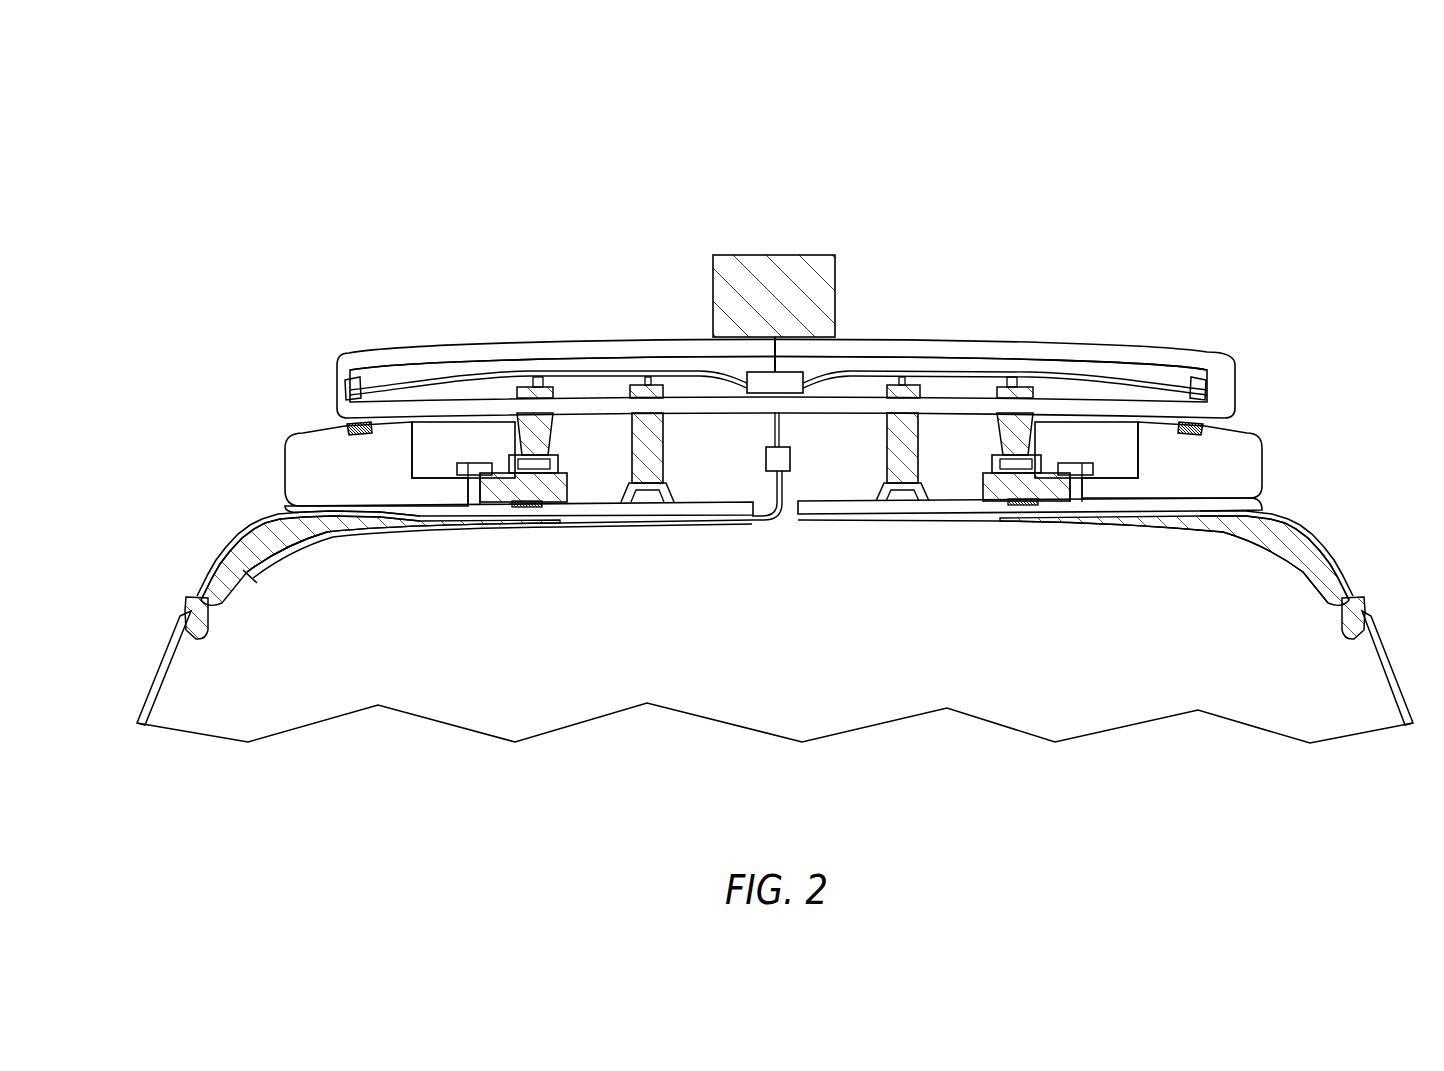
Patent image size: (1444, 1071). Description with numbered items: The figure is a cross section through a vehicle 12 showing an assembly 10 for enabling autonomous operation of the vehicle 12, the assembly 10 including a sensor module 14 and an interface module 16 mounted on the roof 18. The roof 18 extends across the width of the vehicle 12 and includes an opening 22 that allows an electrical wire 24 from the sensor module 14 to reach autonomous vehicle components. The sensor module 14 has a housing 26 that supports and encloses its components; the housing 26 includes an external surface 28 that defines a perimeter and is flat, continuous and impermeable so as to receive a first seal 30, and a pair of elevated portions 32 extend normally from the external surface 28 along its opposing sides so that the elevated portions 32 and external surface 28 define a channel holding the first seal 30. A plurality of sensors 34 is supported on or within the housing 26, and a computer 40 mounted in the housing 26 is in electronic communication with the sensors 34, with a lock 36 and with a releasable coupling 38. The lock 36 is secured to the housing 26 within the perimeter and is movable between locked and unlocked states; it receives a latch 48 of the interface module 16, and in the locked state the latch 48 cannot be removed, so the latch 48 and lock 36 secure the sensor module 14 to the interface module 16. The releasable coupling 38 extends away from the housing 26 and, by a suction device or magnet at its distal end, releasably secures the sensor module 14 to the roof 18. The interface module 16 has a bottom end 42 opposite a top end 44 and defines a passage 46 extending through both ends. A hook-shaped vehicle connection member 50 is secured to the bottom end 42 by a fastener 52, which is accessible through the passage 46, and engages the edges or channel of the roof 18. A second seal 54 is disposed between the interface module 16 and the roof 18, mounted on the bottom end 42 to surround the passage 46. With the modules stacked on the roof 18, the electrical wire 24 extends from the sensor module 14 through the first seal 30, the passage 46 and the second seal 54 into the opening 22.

The assembly 10 is at (352, 185).
The vehicle 12 is at (769, 645).
The sensor module 14 is at (318, 383).
The interface module 16 is at (283, 486).
The roof 18 is at (1318, 548).
The opening 22 is at (788, 509).
The electrical wire 24 is at (781, 428).
The housing 26 is at (934, 350).
The external surface 28 is at (350, 425).
The first seal 30 is at (350, 428).
The elevated portions 32 is at (342, 436).
The sensors 34 is at (735, 275).
The lock 36 is at (541, 423).
The releasable coupling 38 is at (658, 443).
The computer 40 is at (745, 380).
The bottom end 42 is at (373, 494).
The top end 44 is at (338, 433).
The passage 46 is at (718, 486).
The latch 48 is at (554, 463).
The vehicle connection member 50 is at (200, 578).
The fastener 52 is at (455, 471).
The second seal 54 is at (530, 507).